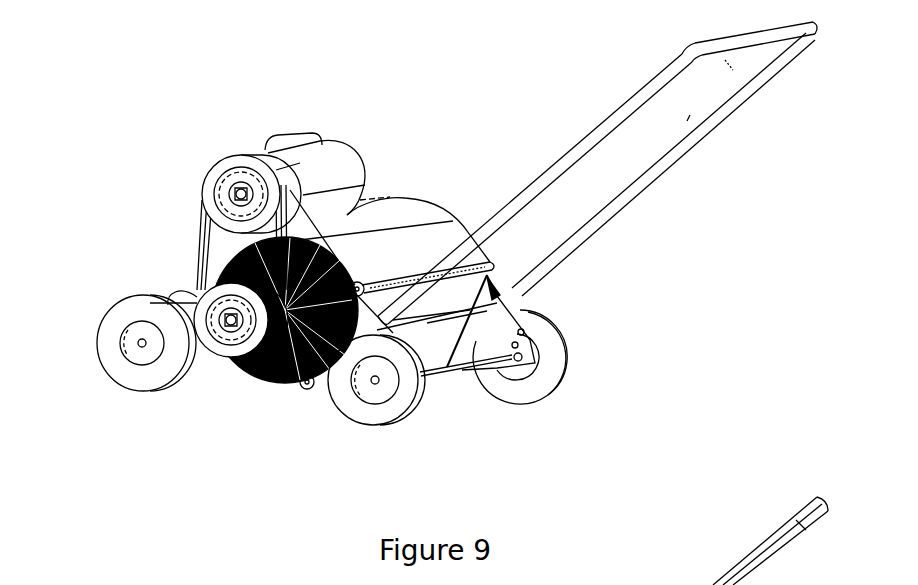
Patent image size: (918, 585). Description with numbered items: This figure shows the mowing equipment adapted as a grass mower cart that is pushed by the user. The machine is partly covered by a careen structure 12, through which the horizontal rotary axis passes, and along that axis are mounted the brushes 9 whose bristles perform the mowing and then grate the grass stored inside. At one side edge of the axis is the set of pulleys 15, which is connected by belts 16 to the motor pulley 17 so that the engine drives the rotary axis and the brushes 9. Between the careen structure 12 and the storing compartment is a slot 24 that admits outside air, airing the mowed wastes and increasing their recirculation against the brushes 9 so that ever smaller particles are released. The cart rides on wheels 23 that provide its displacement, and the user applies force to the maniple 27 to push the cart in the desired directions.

The brushes 9 is at (282, 340).
The careen structure 12 is at (421, 199).
The set of pulleys 15 is at (213, 348).
The belts 16 is at (198, 222).
The motor pulley 17 is at (218, 168).
The wheels 23 is at (103, 378).
The slot 24 is at (458, 278).
The maniple 27 is at (779, 40).